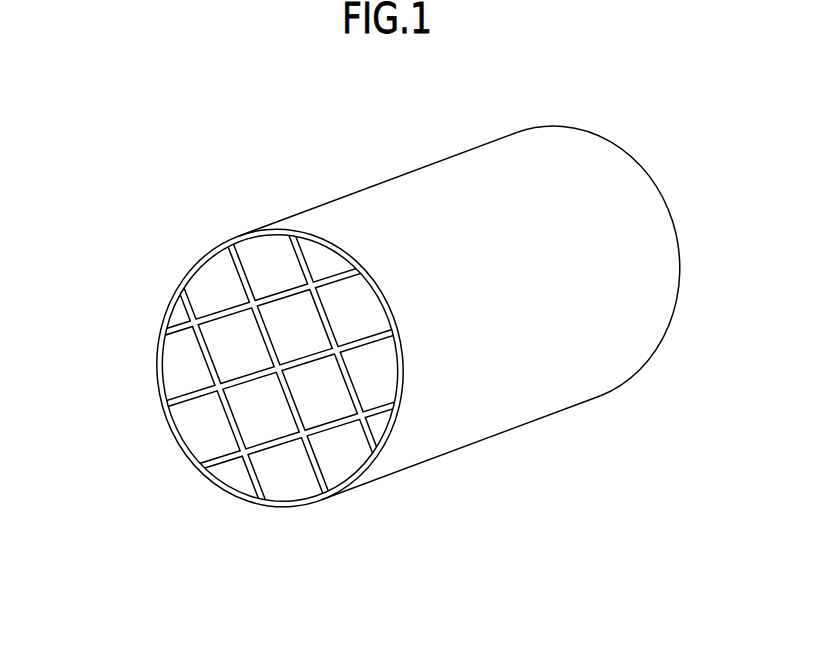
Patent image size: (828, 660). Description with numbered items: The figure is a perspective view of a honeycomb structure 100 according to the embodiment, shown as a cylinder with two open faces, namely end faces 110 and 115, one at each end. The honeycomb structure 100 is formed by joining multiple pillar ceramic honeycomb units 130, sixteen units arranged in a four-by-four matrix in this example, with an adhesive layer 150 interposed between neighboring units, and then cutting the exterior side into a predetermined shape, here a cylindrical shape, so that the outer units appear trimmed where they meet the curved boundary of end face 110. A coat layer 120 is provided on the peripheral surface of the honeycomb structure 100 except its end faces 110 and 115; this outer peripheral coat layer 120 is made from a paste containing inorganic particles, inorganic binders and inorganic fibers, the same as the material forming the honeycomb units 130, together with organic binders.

The honeycomb structure 100 is at (162, 97).
The end face 110 is at (114, 344).
The end face 115 is at (664, 158).
The coat layer 120 is at (358, 217).
The honeycomb unit 130 is at (186, 319).
The adhesive layer 150 is at (368, 427).